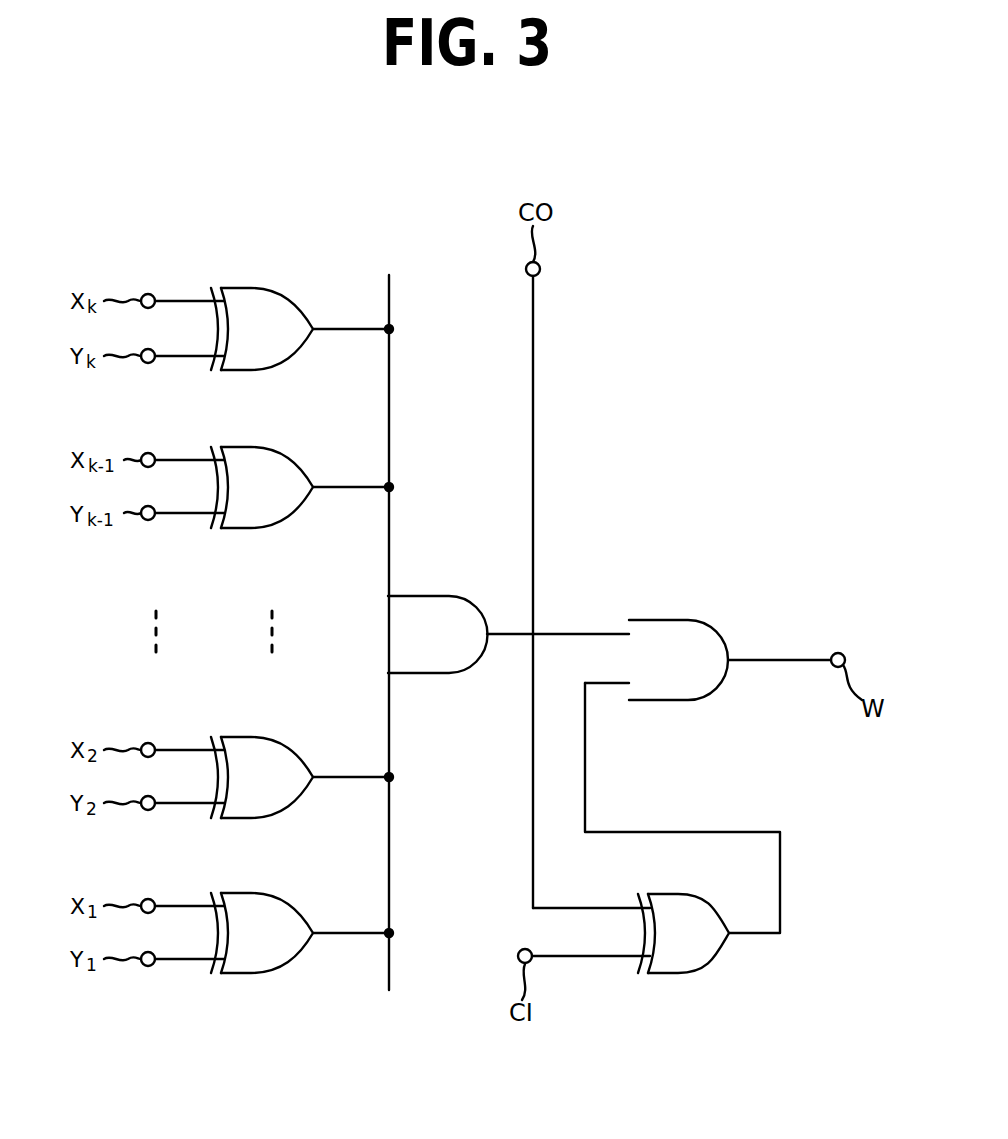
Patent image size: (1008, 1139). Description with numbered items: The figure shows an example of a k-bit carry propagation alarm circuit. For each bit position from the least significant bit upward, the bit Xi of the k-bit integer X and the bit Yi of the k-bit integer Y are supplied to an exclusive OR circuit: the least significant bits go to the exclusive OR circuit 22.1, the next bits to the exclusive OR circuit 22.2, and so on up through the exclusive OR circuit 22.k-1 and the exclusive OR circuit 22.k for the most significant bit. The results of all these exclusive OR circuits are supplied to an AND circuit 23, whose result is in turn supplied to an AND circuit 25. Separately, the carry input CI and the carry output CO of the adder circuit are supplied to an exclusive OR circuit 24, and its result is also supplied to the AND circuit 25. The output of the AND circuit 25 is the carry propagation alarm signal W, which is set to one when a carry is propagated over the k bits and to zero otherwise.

The exclusive OR circuit 22.k is at (290, 361).
The exclusive OR circuit 22.k-1 is at (290, 520).
The exclusive OR circuit 22.2 is at (290, 810).
The exclusive OR circuit 22.1 is at (290, 966).
The AND circuit 23 is at (462, 597).
The exclusive OR circuit 24 is at (705, 960).
The AND circuit 25 is at (720, 630).